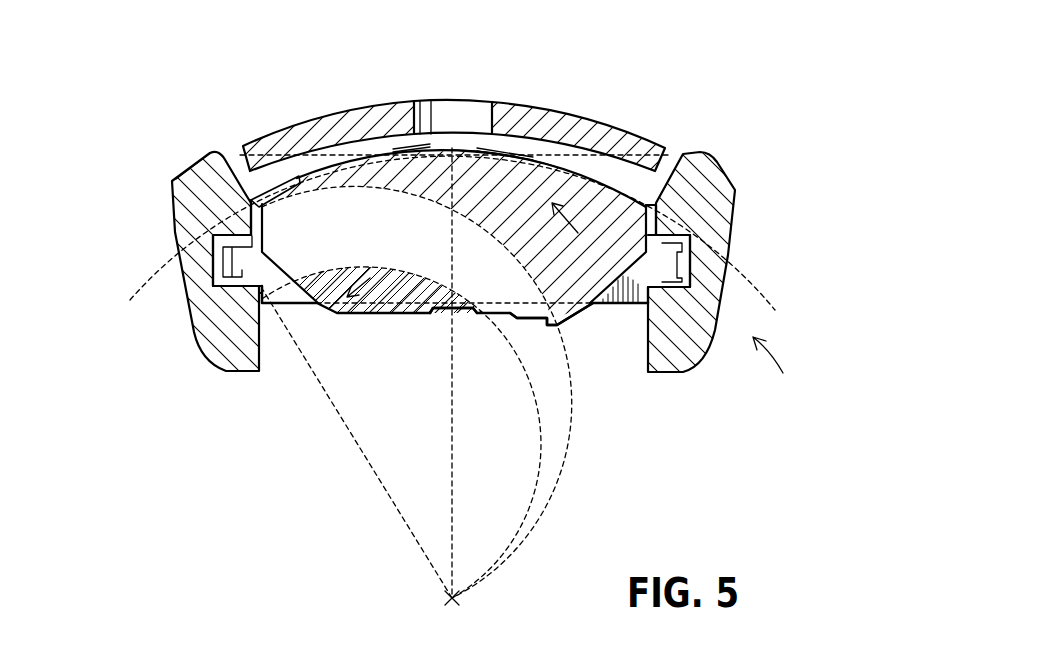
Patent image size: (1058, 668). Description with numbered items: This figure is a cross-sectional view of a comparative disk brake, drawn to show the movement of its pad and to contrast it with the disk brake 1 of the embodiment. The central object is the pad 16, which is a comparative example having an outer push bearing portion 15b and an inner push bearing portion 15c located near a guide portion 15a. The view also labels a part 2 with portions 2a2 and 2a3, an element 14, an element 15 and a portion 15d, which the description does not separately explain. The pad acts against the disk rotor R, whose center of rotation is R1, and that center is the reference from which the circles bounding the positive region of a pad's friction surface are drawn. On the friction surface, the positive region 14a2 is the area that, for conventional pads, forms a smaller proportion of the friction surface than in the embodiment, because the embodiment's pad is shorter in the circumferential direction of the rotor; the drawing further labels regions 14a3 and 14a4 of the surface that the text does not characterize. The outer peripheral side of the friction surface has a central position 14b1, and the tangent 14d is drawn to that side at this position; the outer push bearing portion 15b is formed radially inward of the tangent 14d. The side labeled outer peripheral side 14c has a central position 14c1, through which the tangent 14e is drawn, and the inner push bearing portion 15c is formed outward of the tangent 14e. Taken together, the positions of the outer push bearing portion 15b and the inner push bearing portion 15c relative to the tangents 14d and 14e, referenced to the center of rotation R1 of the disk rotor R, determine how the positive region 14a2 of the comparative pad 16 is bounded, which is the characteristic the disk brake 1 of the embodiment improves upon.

The disk brake 1 is at (165, 86).
The housing 2 is at (147, 186).
The housing upper surface 2a2 is at (184, 178).
The housing lower portion 2a3 is at (250, 300).
The lens 14 is at (353, 223).
The positive region 14a2 is at (480, 243).
The lens side surface portion 14a3 is at (603, 203).
The lens lower surface portion 14a4 is at (360, 322).
The central position 14b1 is at (452, 151).
The outer peripheral side 14c is at (512, 314).
The central position 14c1 is at (442, 313).
The tangent 14d is at (364, 160).
The tangent 14e is at (302, 305).
The lens frame 15 is at (278, 190).
The guide portion 15a is at (223, 260).
The outer push bearing portion 15b is at (250, 200).
The inner push bearing portion 15c is at (262, 300).
The frame right engaging hook 15d is at (663, 263).
The pad 16 is at (343, 63).
The disk rotor R is at (757, 295).
The center of rotation R1 is at (455, 599).